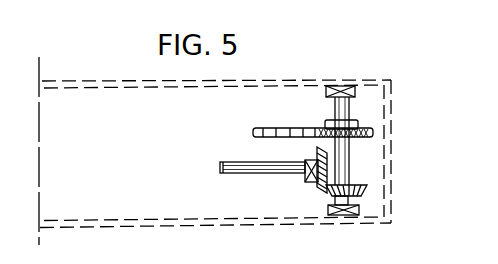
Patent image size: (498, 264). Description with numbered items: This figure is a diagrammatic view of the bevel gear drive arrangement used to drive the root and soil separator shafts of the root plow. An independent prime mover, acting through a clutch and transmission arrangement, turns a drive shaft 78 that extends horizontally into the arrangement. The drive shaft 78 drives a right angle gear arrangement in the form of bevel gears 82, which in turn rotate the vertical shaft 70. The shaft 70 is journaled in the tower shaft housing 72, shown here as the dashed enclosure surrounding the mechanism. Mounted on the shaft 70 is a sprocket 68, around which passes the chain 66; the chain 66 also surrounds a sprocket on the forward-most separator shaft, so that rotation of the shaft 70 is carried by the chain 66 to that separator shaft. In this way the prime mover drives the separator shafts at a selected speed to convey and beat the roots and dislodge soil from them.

The chain 66 is at (278, 128).
The sprocket 68 is at (373, 129).
The shaft 70 is at (342, 110).
The tower shaft housing 72 is at (392, 182).
The drive shaft 78 is at (249, 170).
The bevel gears 82 is at (318, 188).